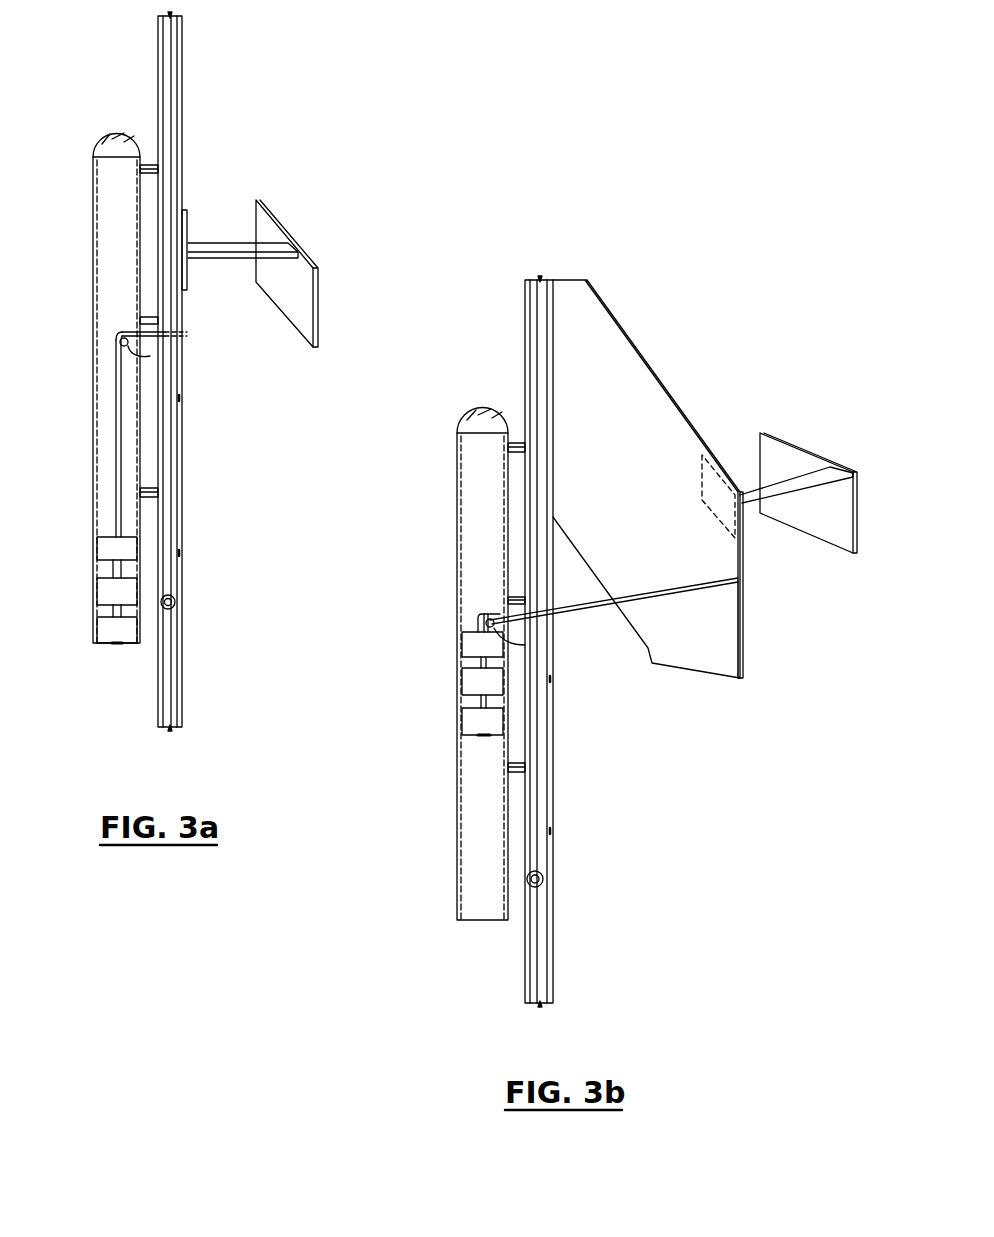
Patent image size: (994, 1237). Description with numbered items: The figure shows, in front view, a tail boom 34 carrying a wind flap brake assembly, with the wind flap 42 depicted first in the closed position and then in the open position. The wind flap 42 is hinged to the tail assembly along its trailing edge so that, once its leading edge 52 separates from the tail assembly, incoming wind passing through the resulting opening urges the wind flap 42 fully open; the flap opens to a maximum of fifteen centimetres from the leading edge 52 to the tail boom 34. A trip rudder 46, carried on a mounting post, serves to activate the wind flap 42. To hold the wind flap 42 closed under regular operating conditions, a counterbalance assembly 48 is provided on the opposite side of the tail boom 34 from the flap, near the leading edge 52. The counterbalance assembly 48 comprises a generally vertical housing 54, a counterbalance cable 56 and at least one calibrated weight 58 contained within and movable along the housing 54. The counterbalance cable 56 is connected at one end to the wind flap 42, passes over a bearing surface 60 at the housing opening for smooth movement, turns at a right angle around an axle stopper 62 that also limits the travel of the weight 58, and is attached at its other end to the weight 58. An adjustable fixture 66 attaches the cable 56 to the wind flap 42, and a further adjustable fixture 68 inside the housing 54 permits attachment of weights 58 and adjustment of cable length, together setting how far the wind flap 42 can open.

In FIG. 3a, the tail boom 34 is at (197, 660).
In FIG. 3b, the tail boom 34 is at (540, 938).
In FIG. 3a, the wind flap 42 is at (183, 188).
In FIG. 3b, the wind flap 42 is at (658, 408).
In FIG. 3a, the trip rudder 46 is at (318, 305).
In FIG. 3b, the trip rudder 46 is at (843, 467).
In FIG. 3a, the counterbalance assembly 48 is at (93, 277).
In FIG. 3b, the counterbalance assembly 48 is at (458, 532).
In FIG. 3b, the leading edge 52 is at (745, 630).
In FIG. 3a, the housing 54 is at (93, 490).
In FIG. 3b, the housing 54 is at (458, 826).
In FIG. 3a, the counterbalance cable 56 is at (117, 424).
In FIG. 3b, the counterbalance cable 56 is at (485, 617).
In FIG. 3a, the calibrated weight 58 is at (107, 550).
In FIG. 3b, the calibrated weight 58 is at (468, 648).
In FIG. 3a, the bearing surface 60 is at (145, 338).
In FIG. 3b, the bearing surface 60 is at (497, 623).
In FIG. 3a, the axle stopper 62 is at (130, 350).
In FIG. 3b, the axle stopper 62 is at (494, 645).
In FIG. 3a, the adjustable fixture 66 is at (187, 333).
In FIG. 3b, the adjustable fixture 66 is at (745, 578).
In FIG. 3a, the adjustable fixture 68 is at (118, 645).
In FIG. 3b, the adjustable fixture 68 is at (487, 737).